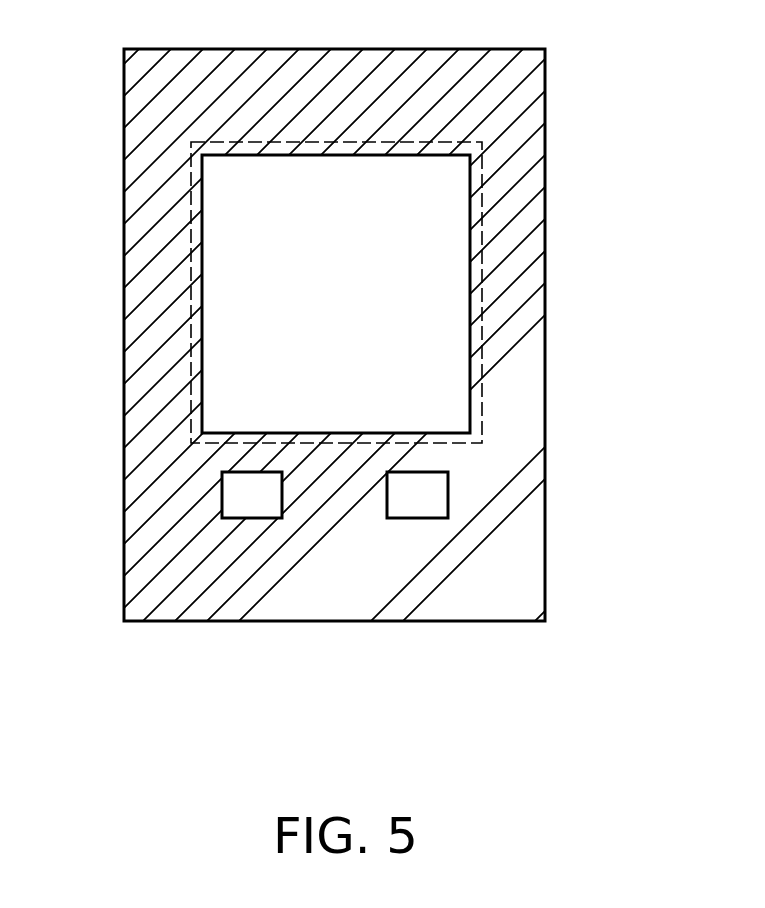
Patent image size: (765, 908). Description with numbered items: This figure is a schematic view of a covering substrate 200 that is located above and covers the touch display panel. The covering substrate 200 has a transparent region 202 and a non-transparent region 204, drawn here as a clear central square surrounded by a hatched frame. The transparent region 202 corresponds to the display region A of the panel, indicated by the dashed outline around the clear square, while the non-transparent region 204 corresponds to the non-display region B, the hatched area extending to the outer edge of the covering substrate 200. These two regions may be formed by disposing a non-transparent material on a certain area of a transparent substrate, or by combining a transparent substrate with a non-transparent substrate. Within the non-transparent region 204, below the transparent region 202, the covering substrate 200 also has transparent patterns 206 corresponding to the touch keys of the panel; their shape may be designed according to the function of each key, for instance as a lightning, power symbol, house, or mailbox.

The covering substrate 200 is at (128, 540).
The transparent region 202 is at (443, 217).
The non-transparent region 204 is at (523, 281).
The transparent pattern 206 is at (253, 510).
The display region A is at (486, 372).
The non-display region B is at (473, 570).